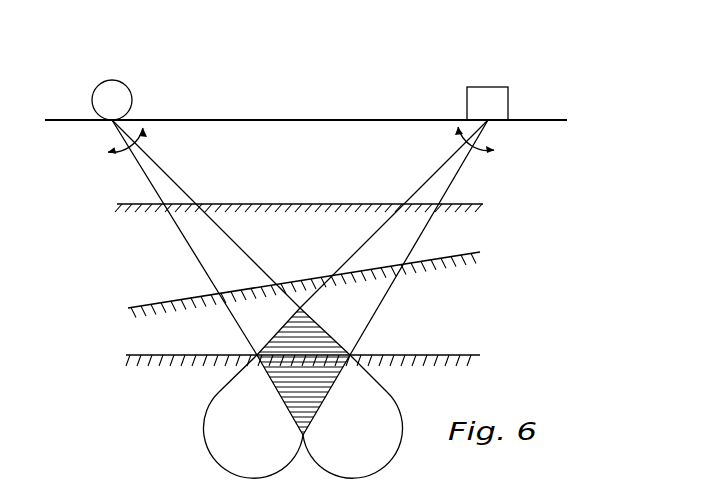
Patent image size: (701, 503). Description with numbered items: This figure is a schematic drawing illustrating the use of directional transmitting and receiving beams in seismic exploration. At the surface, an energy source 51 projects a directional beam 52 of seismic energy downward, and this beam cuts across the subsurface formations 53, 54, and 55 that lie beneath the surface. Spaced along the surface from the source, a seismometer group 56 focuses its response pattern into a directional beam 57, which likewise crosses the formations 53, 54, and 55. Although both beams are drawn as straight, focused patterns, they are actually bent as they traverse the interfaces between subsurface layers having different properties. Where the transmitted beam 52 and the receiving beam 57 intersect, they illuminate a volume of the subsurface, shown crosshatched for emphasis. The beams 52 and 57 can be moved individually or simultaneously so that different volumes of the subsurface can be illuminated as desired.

The energy source 51 is at (118, 95).
The directional beam 52 is at (200, 242).
The subsurface formation 53 is at (299, 221).
The subsurface formation 54 is at (443, 262).
The subsurface formation 55 is at (405, 358).
The seismometer group 56 is at (497, 102).
The directional beam 57 is at (398, 245).